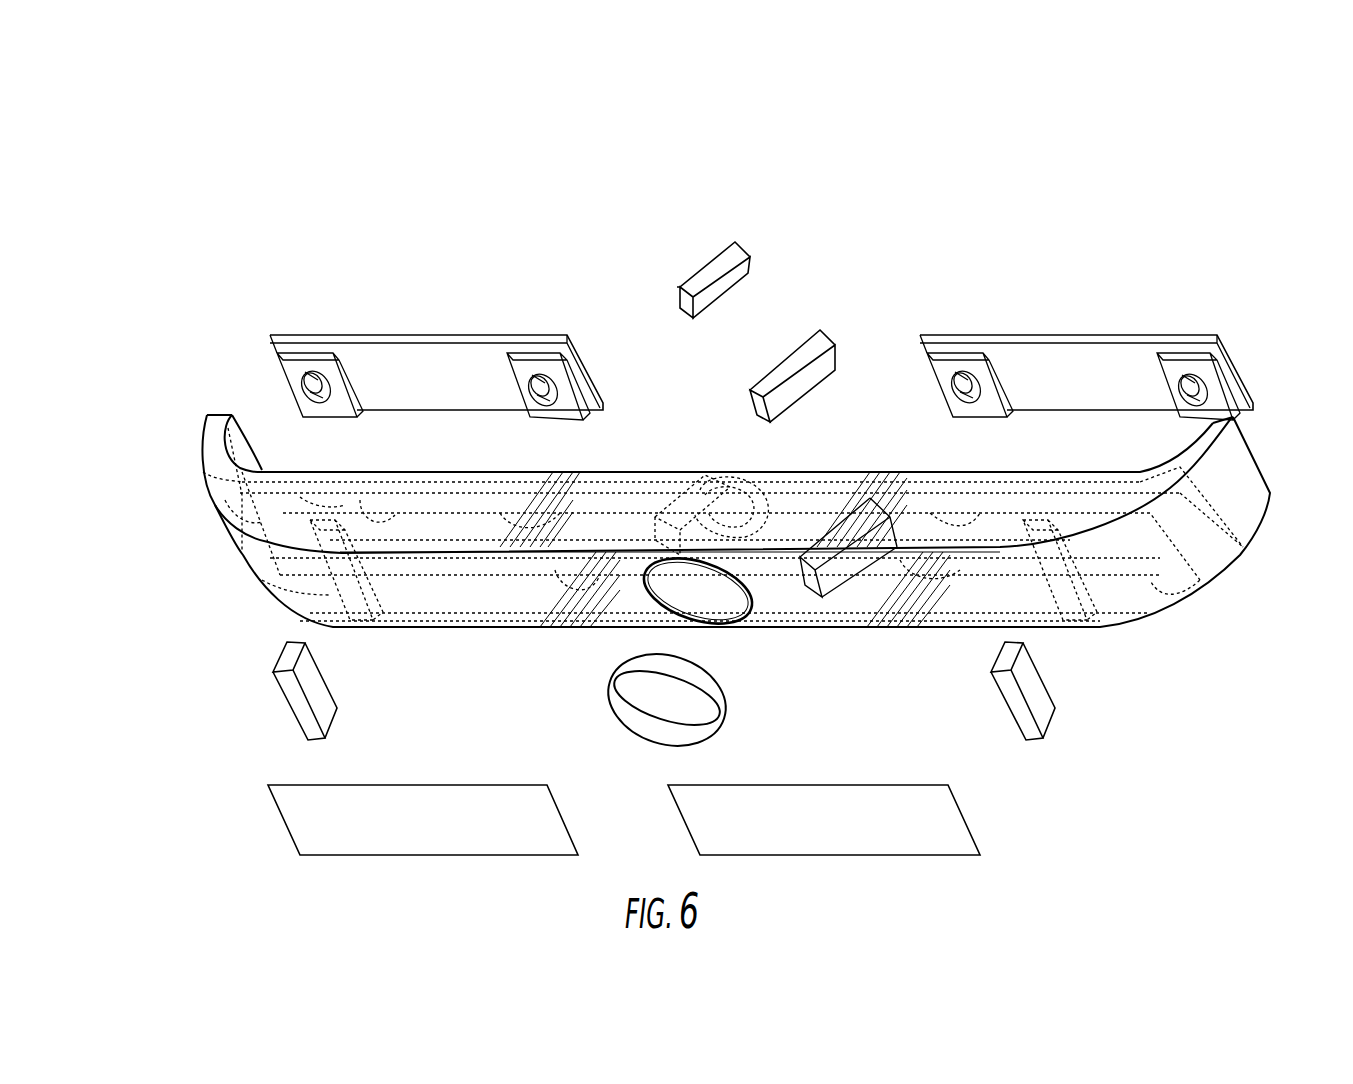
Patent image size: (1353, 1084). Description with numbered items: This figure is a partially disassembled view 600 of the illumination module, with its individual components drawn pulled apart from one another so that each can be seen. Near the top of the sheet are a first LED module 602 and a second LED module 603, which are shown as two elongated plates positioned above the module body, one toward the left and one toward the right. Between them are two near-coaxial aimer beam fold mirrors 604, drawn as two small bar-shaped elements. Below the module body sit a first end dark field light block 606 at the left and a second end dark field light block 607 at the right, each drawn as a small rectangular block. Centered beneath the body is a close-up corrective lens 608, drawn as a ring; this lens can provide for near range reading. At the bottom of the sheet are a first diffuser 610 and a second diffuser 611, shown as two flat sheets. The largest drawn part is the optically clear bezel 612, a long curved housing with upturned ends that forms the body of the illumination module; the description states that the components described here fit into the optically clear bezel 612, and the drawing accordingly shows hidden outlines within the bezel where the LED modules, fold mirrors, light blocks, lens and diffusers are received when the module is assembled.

The partially disassembled view 600 is at (352, 165).
The first LED module 602 is at (401, 330).
The second LED module 603 is at (1116, 330).
The near-coaxial aimer beam fold mirrors 604 is at (828, 326).
The first end dark field light block 606 is at (268, 690).
The second end dark field light block 607 is at (990, 688).
The close-up corrective lens 608 is at (605, 683).
The first diffuser 610 is at (263, 802).
The second diffuser 611 is at (965, 806).
The optically clear bezel 612 is at (1165, 624).